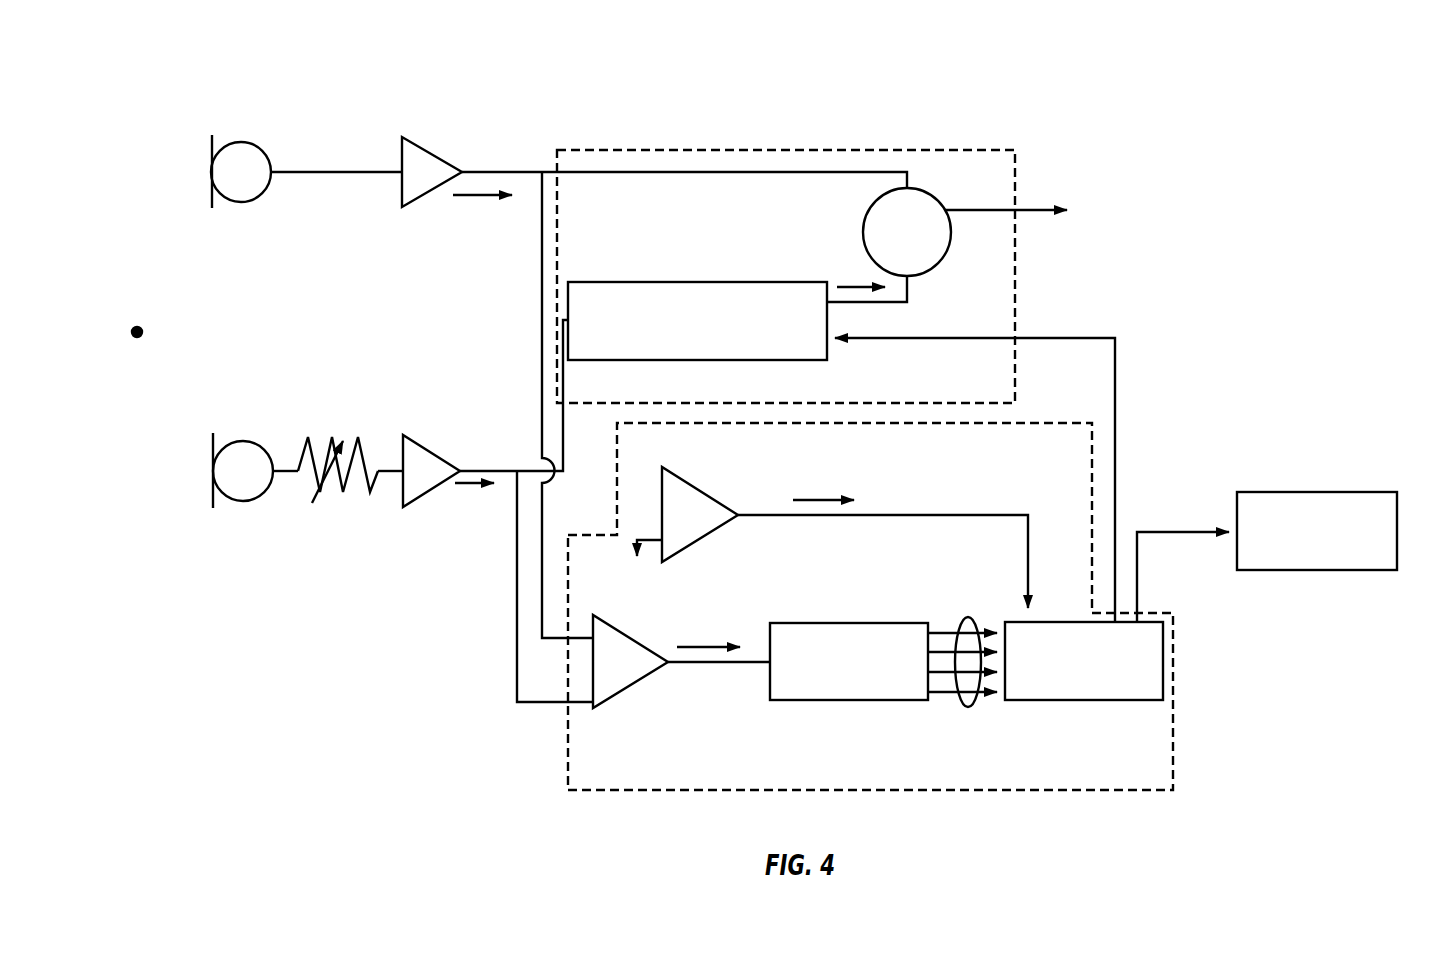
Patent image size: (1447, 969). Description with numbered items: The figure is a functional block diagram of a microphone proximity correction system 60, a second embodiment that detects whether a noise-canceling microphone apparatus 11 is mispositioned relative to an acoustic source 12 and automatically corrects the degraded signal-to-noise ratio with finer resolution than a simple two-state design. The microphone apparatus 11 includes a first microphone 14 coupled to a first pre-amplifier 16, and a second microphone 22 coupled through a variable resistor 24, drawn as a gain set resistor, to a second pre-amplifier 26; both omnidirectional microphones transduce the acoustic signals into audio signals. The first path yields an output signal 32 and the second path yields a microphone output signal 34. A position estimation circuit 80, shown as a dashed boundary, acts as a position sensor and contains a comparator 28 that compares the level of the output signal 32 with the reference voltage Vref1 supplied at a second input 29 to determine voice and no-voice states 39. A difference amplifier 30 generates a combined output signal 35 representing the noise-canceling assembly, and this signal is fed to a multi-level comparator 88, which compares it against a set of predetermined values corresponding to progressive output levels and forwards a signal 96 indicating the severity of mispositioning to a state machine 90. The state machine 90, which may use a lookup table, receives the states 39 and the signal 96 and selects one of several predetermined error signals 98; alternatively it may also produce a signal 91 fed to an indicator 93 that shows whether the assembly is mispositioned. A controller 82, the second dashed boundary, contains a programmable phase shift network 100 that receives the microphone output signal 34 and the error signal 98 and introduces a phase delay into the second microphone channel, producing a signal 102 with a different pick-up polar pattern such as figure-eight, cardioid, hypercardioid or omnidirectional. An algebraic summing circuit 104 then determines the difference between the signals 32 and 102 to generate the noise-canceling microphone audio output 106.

The microphone apparatus 11 is at (350, 62).
The acoustic source 12 is at (133, 335).
The first microphone 14 is at (252, 143).
The first pre-amplifier 16 is at (443, 153).
The second microphone 22 is at (212, 467).
The variable resistor 24 is at (330, 450).
The second pre-amplifier 26 is at (442, 452).
The comparator 28 is at (708, 490).
The second input 29 is at (633, 547).
The difference amplifier 30 is at (643, 678).
The output signal of the first microphone 32 is at (487, 199).
The microphone output signal 34 is at (475, 488).
The combined output signal 35 is at (703, 645).
The voice and no voice states 39 is at (822, 498).
The microphone proximity correction system 60 is at (285, 742).
The position estimation circuit 80 is at (1132, 792).
The controller 82 is at (1015, 152).
The multi-level comparator 88 is at (828, 701).
The state machine 90 is at (1163, 655).
The signal 91 is at (1200, 520).
The indicator 93 is at (1363, 492).
The signal 96 is at (968, 703).
The error signal 98 is at (1117, 392).
The programmable phase shift network 100 is at (765, 362).
The signal 102 is at (858, 285).
The algebraic summing circuit 104 is at (940, 262).
The NC microphone audio output 106 is at (1135, 195).